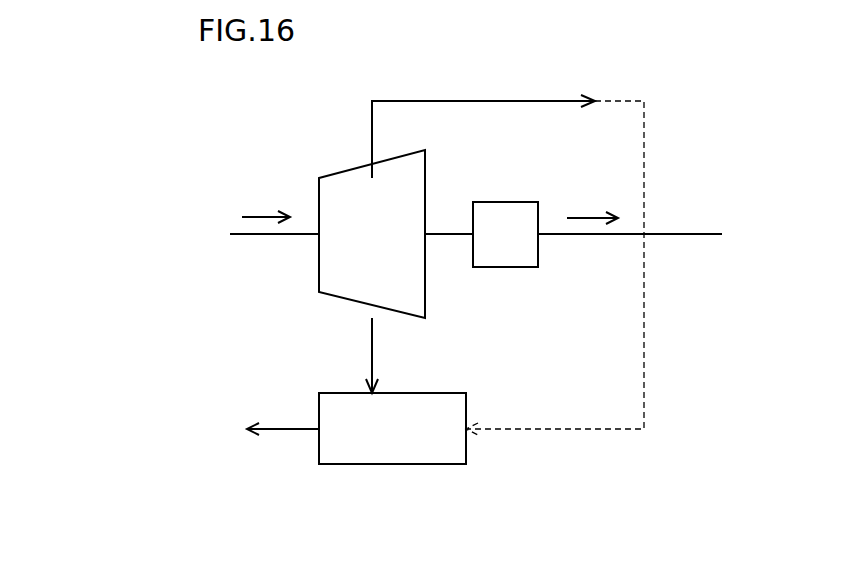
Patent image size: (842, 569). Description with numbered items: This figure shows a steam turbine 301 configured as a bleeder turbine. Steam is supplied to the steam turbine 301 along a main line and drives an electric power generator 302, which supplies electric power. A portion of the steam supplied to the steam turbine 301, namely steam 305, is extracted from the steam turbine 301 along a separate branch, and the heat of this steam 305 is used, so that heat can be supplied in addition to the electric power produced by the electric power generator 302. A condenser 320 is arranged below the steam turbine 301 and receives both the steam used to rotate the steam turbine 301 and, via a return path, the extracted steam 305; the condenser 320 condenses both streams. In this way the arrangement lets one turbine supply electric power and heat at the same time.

The steam turbine 301 is at (337, 173).
The steam 305 is at (505, 101).
The electric power generator 302 is at (507, 202).
The condenser 320 is at (397, 464).